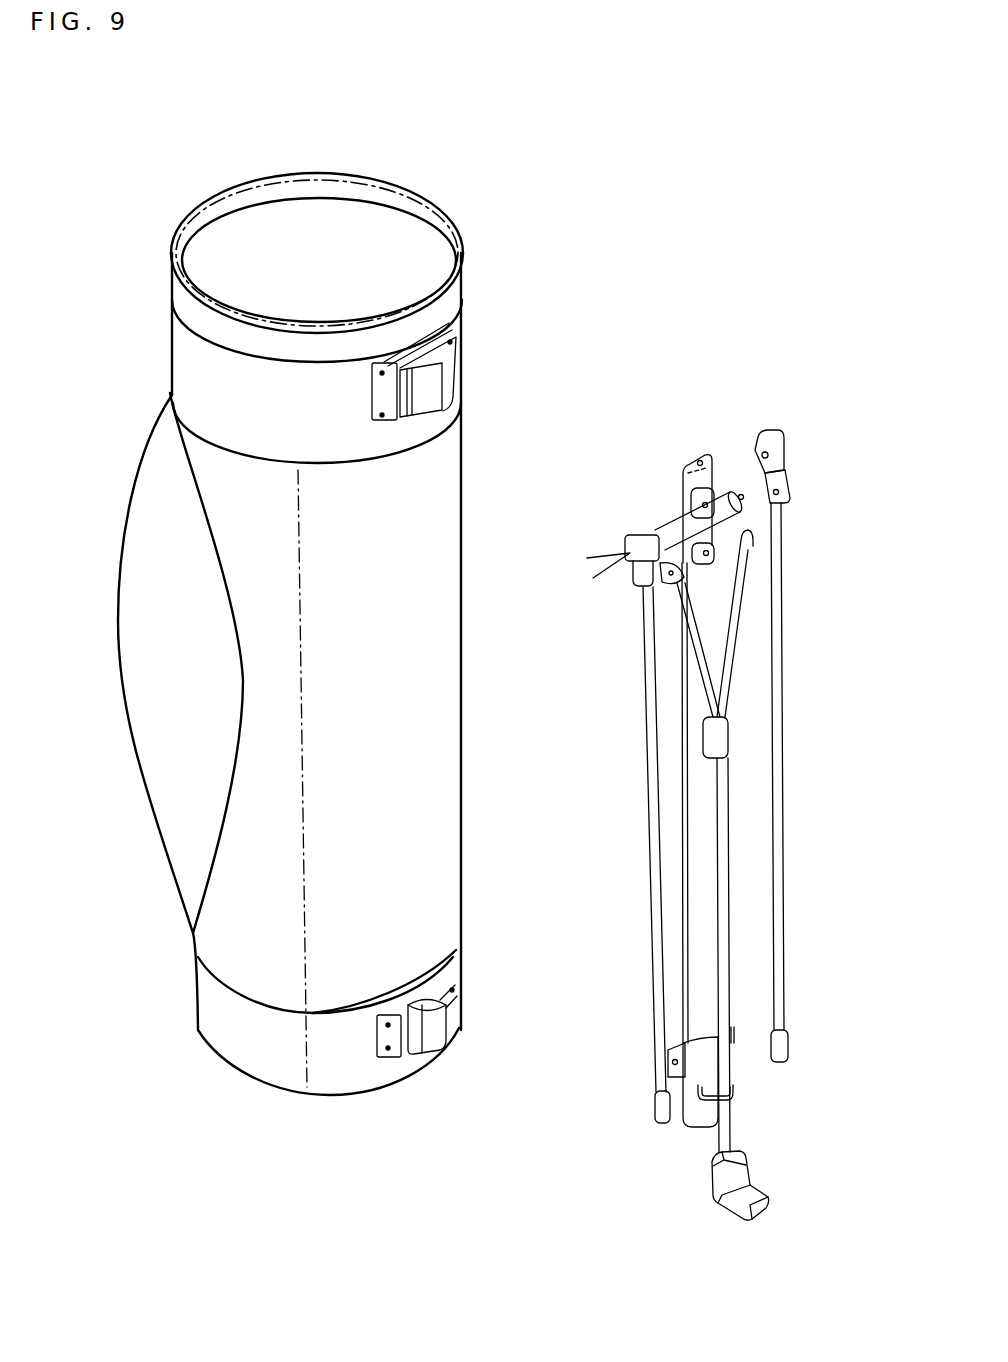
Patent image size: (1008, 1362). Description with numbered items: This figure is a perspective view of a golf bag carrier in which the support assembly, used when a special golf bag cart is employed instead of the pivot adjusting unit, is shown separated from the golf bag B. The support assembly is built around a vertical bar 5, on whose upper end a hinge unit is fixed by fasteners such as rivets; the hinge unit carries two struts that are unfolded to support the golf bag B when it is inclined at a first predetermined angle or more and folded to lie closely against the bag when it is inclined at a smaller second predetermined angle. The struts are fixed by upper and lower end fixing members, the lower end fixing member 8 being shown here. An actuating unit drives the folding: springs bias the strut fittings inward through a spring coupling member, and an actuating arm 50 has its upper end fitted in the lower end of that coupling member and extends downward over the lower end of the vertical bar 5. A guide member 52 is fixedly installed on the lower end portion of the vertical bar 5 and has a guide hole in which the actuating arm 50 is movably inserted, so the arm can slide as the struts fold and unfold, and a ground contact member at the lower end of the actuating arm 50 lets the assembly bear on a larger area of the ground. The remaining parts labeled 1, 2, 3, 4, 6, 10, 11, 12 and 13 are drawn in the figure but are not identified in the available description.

The golf bag body B is at (213, 937).
The guide member 52 is at (442, 385).
The actuating arm 50 is at (409, 1072).
The first support leg 1 is at (698, 870).
The second support leg 2 is at (780, 875).
The wire 3 is at (722, 553).
The bracket 4 is at (740, 495).
The vertical bar 5 is at (683, 520).
The hook 6 is at (760, 430).
The lower end fixing member 8 is at (723, 733).
The actuating rod 10 is at (727, 1123).
The lower bracket 11 is at (707, 1040).
The pivot 12 is at (683, 1092).
The foot plate 13 is at (755, 1203).